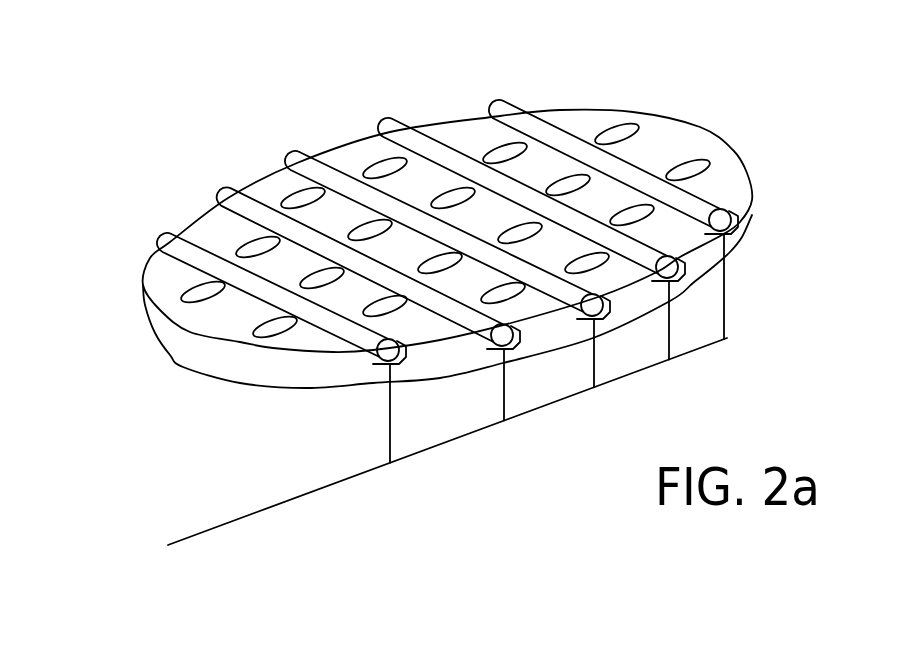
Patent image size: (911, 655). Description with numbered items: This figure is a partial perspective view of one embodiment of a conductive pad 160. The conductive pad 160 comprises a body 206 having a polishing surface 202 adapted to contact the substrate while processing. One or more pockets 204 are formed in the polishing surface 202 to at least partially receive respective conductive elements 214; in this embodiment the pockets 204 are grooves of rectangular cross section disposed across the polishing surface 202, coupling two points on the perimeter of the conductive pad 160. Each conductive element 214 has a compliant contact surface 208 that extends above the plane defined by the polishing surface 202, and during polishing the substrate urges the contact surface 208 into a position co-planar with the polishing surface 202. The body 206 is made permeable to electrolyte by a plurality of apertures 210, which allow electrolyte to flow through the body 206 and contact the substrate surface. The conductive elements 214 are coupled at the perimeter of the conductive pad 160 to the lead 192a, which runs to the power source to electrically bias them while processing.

The conductive pad 160 is at (409, 92).
The lead 192a is at (390, 427).
The polishing surface 202 is at (647, 127).
The pockets 204 is at (723, 237).
The body 206 is at (752, 200).
The contact surface 208 is at (347, 172).
The apertures 210 is at (627, 128).
The conductive elements 214 is at (327, 148).